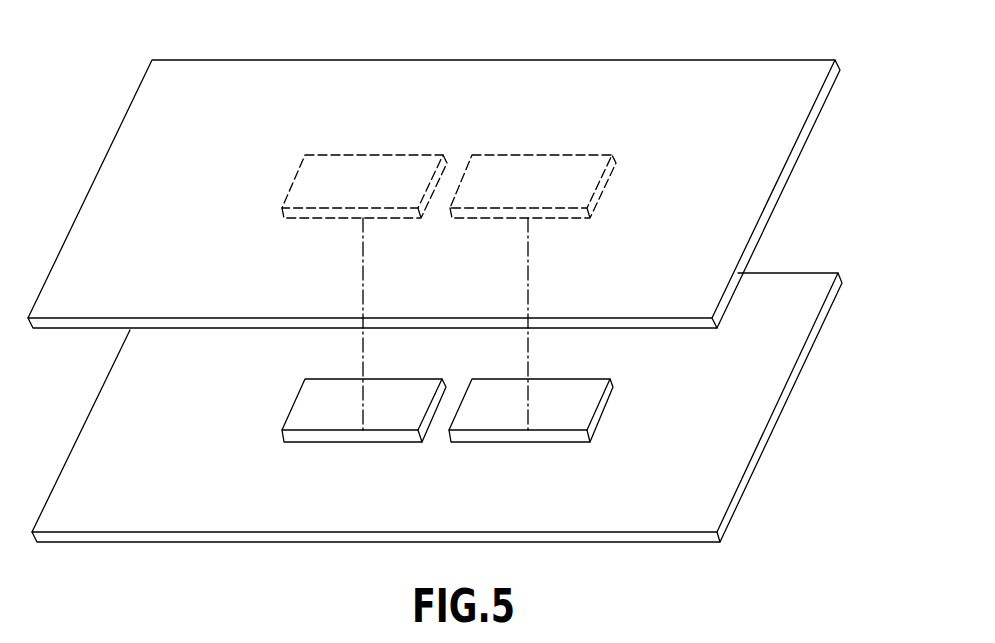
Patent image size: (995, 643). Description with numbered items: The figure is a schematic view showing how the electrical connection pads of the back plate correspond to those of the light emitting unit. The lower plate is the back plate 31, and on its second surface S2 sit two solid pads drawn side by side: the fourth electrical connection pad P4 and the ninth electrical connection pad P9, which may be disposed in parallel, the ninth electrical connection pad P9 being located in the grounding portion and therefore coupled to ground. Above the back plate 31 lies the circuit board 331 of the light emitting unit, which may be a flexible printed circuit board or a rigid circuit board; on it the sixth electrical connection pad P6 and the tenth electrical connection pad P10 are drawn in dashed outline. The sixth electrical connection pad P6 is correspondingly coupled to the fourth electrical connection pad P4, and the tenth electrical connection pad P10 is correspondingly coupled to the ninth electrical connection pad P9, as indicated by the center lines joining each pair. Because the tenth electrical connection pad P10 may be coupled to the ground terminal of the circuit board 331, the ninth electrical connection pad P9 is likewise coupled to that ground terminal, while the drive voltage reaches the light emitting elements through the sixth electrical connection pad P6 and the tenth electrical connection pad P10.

The circuit board 331 is at (775, 200).
The back plate 31 is at (444, 407).
The second surface S2 is at (93, 463).
The tenth electrical connection pad P10 is at (305, 173).
The sixth electrical connection pad P6 is at (587, 163).
The ninth electrical connection pad P9 is at (307, 400).
The fourth electrical connection pad P4 is at (585, 388).